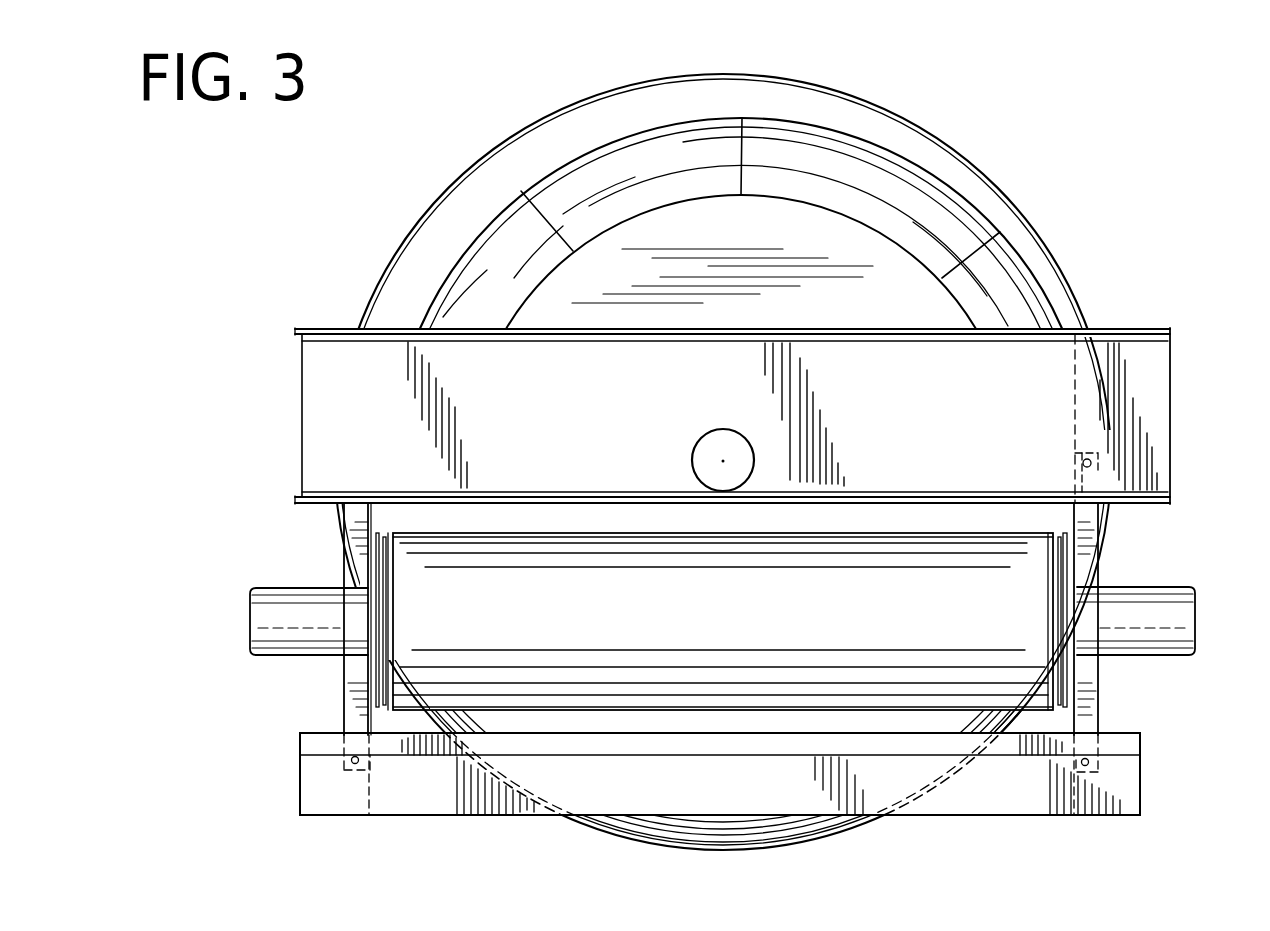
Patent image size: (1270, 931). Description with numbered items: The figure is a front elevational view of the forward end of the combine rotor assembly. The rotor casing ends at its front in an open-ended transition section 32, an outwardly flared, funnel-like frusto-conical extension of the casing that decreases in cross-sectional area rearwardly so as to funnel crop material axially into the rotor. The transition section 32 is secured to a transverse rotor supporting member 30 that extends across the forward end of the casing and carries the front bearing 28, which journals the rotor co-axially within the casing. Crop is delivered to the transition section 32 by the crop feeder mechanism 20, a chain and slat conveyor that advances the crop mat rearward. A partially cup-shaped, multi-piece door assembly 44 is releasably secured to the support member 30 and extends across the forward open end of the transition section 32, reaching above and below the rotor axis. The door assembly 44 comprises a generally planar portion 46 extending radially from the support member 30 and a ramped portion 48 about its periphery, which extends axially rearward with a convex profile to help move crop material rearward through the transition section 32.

The crop feeder mechanism 20 is at (1056, 573).
The front bearing 28 is at (718, 450).
The transverse rotor supporting member 30 is at (1133, 410).
The transition section 32 is at (931, 129).
The door assembly 44 is at (436, 288).
The planar portion 46 is at (773, 192).
The ramped portion 48 is at (1003, 253).